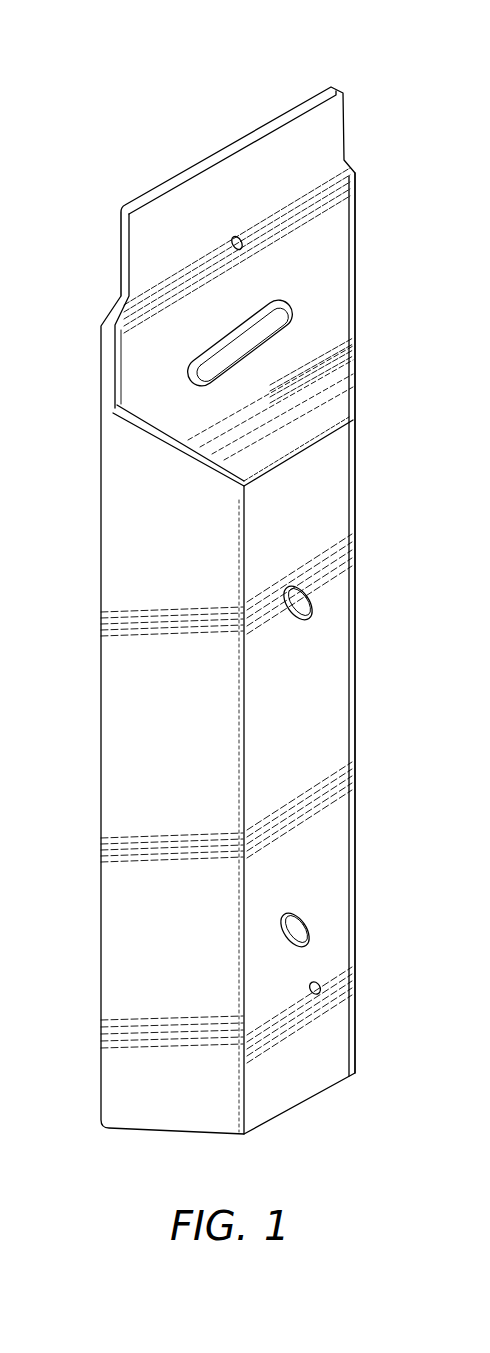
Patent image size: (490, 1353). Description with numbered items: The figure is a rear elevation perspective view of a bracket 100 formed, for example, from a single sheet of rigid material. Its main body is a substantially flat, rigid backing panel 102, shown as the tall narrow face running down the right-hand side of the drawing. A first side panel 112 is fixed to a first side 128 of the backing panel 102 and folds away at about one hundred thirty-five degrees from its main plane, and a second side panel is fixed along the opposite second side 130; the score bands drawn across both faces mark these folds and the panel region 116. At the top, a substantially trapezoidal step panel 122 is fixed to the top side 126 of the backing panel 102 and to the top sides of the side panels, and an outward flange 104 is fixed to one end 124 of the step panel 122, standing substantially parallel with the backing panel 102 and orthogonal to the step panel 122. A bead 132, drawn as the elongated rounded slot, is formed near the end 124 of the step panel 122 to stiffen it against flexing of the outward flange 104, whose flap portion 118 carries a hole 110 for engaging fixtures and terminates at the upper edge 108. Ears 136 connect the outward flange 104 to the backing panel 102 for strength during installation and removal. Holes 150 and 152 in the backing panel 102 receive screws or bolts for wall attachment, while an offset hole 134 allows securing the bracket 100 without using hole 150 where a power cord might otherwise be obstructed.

The bracket 100 is at (176, 92).
The backing panel 102 is at (357, 514).
The outward flange 104 is at (352, 163).
The top edge 108 is at (252, 130).
The hole 110 is at (235, 236).
The first side panel 112 is at (140, 782).
The second side panel 116 is at (310, 766).
The hang flap 118 is at (148, 268).
The step panel 122 is at (280, 367).
The end of step panel 124 is at (143, 396).
The top side 126 is at (157, 443).
The first side of backing panel 128 is at (243, 648).
The second side of backing panel 130 is at (357, 615).
The bead 132 is at (238, 318).
The offset hole 134 is at (315, 996).
The ears 136 is at (103, 337).
The hole 150 is at (296, 916).
The hole 152 is at (297, 620).